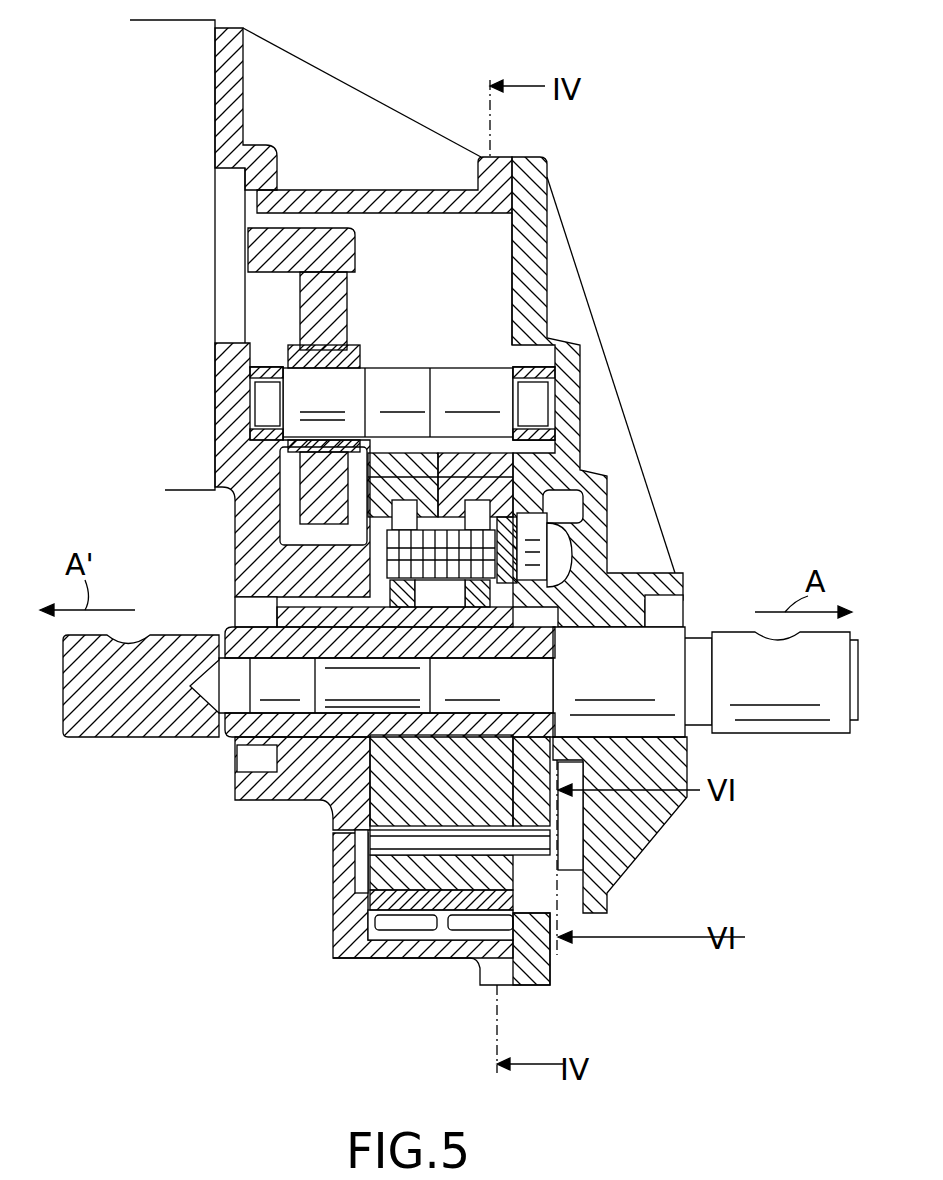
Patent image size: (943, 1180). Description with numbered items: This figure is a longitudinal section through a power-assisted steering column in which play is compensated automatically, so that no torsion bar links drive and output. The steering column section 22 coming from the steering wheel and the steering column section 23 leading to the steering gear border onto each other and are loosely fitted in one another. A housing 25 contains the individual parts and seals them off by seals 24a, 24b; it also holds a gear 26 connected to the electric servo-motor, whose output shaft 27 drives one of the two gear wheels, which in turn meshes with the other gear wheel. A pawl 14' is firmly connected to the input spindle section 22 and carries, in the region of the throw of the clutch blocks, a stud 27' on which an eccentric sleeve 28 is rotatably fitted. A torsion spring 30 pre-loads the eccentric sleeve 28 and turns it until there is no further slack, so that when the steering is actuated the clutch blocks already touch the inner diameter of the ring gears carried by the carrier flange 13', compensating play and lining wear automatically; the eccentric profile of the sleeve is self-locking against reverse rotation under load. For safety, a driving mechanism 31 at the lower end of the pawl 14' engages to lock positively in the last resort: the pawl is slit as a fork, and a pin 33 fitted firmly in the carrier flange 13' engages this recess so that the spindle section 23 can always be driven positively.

The carrier flange 13' is at (383, 822).
The pawl 14' is at (505, 577).
The steering column section 22 is at (335, 310).
The steering column section 23 is at (95, 722).
The seal 24a is at (668, 612).
The seal 24b is at (243, 767).
The housing 25 is at (537, 225).
The gear 26 is at (216, 302).
The output shaft 27 is at (336, 250).
The stud 27' is at (576, 550).
The eccentric sleeve 28 is at (505, 522).
The torsion spring 30 is at (380, 574).
The driving mechanism 31 is at (553, 840).
The pin 33 is at (360, 868).